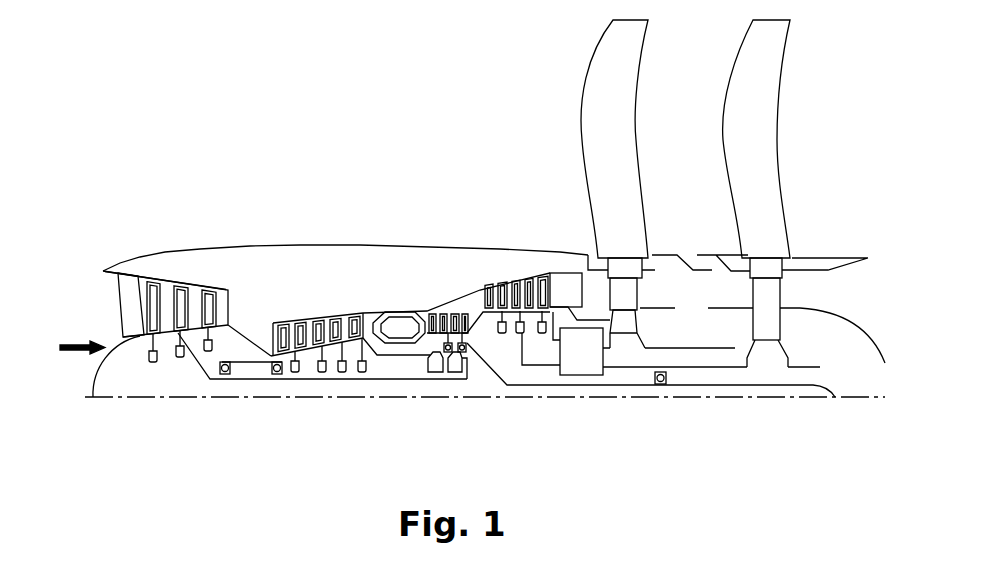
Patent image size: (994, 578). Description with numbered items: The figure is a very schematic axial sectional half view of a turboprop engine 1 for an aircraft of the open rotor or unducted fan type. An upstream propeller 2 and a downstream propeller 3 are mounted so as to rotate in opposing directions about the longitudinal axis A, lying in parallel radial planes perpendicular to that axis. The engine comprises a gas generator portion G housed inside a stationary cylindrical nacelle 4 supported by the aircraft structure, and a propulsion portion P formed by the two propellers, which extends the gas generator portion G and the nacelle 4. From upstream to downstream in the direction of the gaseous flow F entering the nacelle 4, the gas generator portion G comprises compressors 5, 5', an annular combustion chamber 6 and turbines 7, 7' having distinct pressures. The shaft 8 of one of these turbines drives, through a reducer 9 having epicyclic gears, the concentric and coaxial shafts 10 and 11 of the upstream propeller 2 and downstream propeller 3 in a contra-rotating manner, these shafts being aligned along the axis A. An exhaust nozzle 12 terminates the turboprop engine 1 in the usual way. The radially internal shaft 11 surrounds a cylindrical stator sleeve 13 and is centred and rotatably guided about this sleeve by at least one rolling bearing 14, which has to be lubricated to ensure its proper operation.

The turboprop engine 1 is at (218, 121).
The upstream propeller 2 is at (634, 80).
The downstream propeller 3 is at (777, 88).
The nacelle 4 is at (238, 262).
The compressor 5 is at (167, 277).
The compressor 5' is at (318, 288).
The annular combustion chamber 6 is at (402, 351).
The turbine 7 is at (438, 266).
The turbine 7' is at (513, 260).
The shaft 8 is at (542, 368).
The reducer 9 is at (578, 377).
The shaft 10 is at (697, 340).
The shaft 11 is at (715, 368).
The exhaust nozzle 12 is at (867, 257).
The cylindrical stator sleeve 13 is at (763, 385).
The rolling bearing 14 is at (662, 385).
The longitudinal axis A is at (178, 396).
The gaseous flow F is at (82, 339).
The gas generator portion G is at (555, 163).
The propulsion portion P is at (830, 452).